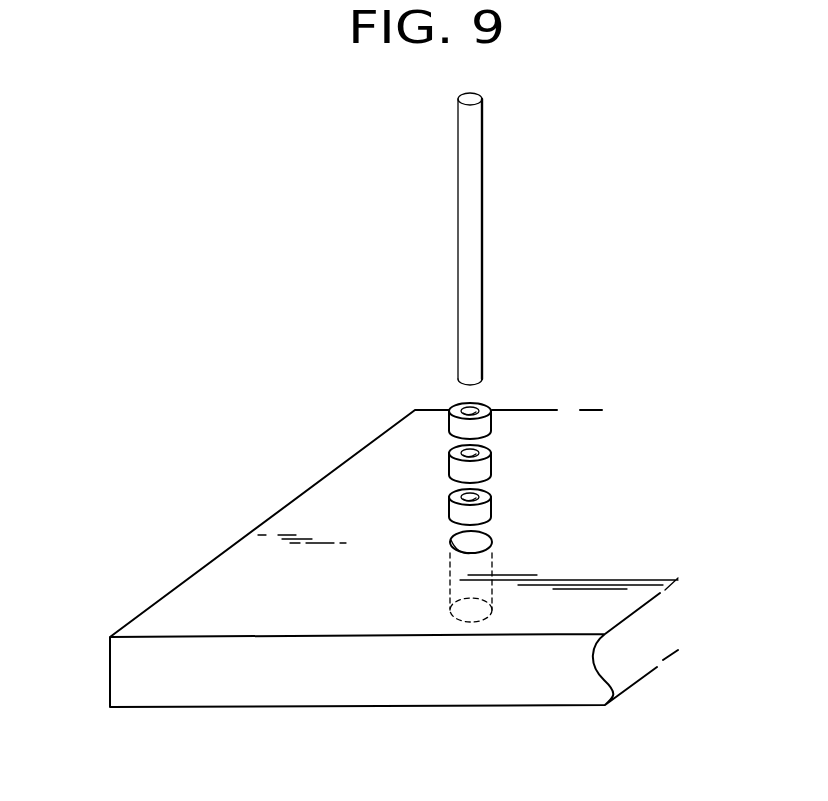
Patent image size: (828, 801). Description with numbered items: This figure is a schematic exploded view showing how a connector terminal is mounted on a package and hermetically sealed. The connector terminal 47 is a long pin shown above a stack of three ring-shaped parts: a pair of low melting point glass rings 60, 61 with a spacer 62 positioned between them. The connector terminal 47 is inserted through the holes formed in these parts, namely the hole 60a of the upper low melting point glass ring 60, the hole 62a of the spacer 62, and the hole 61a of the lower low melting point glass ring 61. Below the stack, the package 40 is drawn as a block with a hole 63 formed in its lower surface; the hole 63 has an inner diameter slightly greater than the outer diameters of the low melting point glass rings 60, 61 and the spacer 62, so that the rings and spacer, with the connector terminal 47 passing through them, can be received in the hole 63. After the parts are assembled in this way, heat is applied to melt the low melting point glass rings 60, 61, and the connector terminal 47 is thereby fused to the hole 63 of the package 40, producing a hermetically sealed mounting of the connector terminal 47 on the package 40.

The package 40 is at (228, 592).
The connector terminal 47 is at (475, 165).
The low melting point glass ring 60 is at (492, 423).
The hole of low melting point glass ring 60a is at (466, 410).
The spacer 62 is at (490, 462).
The hole of spacer 62a is at (462, 452).
The low melting point glass ring 61 is at (491, 508).
The hole of low melting point glass ring 61a is at (455, 497).
The hole 63 is at (452, 544).